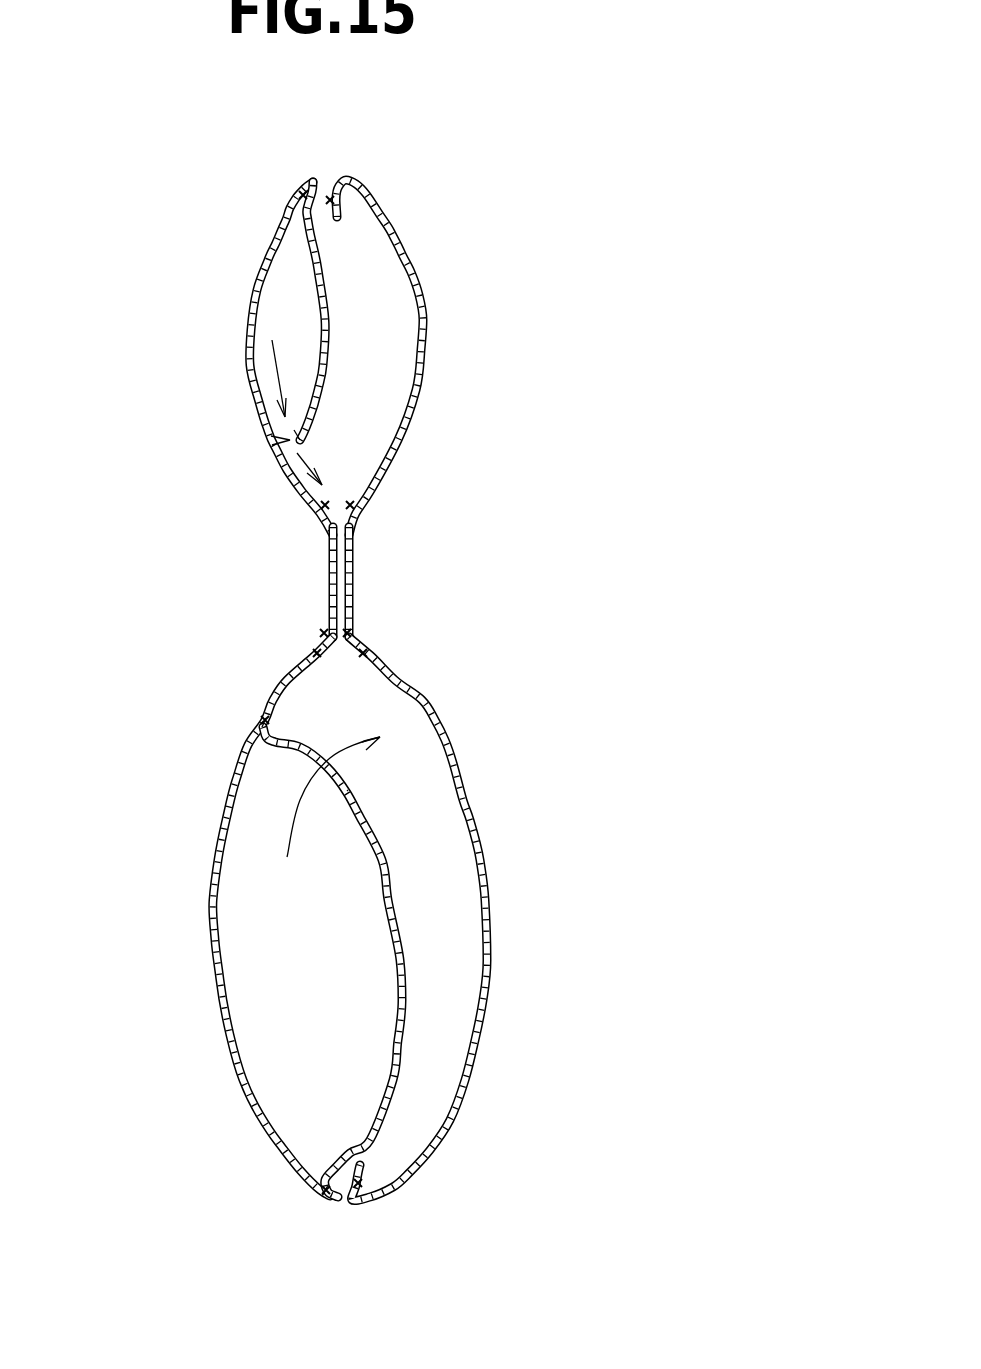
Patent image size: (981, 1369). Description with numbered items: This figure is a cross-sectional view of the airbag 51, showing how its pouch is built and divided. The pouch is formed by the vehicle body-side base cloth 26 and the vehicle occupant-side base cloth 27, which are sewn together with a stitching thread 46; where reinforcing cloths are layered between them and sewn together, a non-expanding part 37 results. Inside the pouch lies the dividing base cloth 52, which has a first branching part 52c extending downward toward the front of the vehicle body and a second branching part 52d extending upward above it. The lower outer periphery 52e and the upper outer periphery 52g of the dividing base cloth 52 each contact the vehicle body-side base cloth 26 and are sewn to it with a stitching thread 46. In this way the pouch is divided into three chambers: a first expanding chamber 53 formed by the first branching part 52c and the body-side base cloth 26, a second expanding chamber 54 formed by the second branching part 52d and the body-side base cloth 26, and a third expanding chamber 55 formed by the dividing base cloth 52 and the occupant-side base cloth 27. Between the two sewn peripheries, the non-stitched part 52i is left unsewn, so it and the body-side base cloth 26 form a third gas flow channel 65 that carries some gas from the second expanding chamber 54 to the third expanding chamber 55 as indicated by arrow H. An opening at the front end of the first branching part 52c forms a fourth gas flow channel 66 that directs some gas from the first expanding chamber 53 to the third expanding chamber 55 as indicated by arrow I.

The vehicle body-side base cloth 26 is at (283, 683).
The vehicle occupant-side base cloth 27 is at (435, 722).
The non-expanding part 37 is at (353, 583).
The stitching thread 46 is at (350, 183).
The airbag 51 is at (653, 402).
The dividing base cloth 52 is at (420, 947).
The first branching part 52c is at (407, 1008).
The second branching part 52d is at (332, 296).
The lower outer periphery 52e is at (323, 1193).
The upper outer periphery 52g is at (260, 732).
The non-stitched part 52i is at (297, 437).
The first expanding chamber 53 is at (280, 985).
The second expanding chamber 54 is at (290, 300).
The third expanding chamber 55 is at (387, 352).
The third gas flow channel 65 is at (290, 440).
The fourth gas flow channel 66 is at (347, 790).
The arrow H is at (253, 363).
The arrow I is at (297, 812).